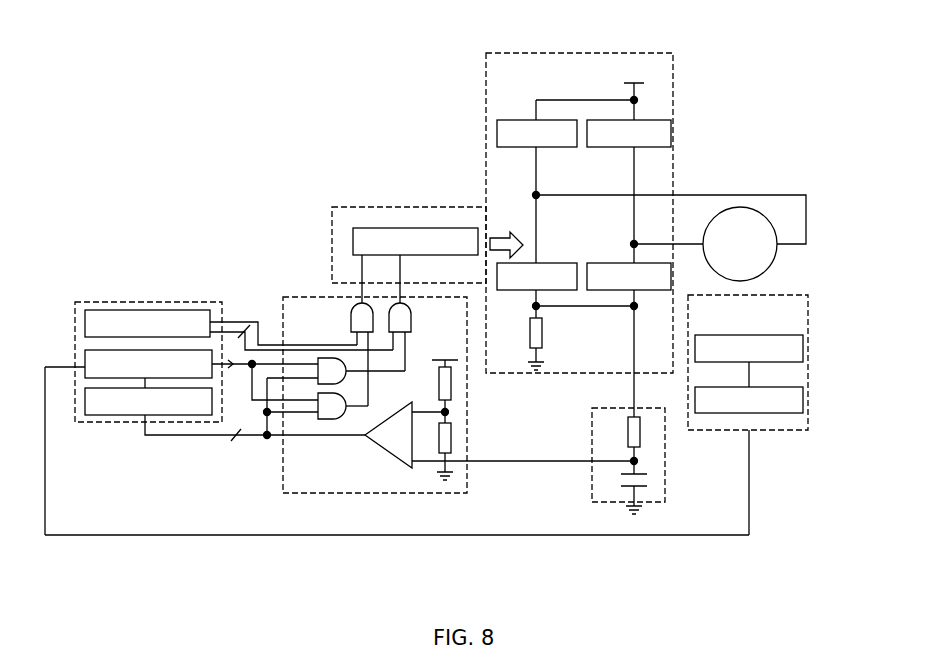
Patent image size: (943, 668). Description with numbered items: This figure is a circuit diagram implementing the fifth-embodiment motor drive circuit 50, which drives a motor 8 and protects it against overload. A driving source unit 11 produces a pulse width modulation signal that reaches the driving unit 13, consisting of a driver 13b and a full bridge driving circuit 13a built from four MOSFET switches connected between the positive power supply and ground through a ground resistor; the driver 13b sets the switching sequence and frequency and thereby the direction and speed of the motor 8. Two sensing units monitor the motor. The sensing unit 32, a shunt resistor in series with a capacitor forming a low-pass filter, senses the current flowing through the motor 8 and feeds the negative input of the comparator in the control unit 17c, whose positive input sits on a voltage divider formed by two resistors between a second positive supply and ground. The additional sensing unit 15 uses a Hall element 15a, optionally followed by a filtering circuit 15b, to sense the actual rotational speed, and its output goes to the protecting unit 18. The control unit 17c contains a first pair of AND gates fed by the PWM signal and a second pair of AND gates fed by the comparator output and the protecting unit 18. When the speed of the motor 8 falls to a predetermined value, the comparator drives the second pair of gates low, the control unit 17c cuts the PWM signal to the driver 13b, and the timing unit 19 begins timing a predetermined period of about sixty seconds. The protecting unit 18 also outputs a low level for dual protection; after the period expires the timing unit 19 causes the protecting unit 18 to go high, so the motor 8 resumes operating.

The motor drive circuit 50 is at (418, 98).
The driving unit 13 is at (570, 52).
The full bridge driving circuit 13a is at (660, 101).
The driver 13b is at (428, 228).
The motor 8 is at (740, 207).
The sensing unit 15 is at (783, 296).
The Hall element 15a is at (803, 346).
The filtering circuit 15b is at (800, 388).
The sensing unit 32 is at (592, 430).
The control unit 17c is at (283, 297).
The driving source unit 11 is at (80, 325).
The protecting unit 18 is at (80, 356).
The timing unit 19 is at (92, 417).